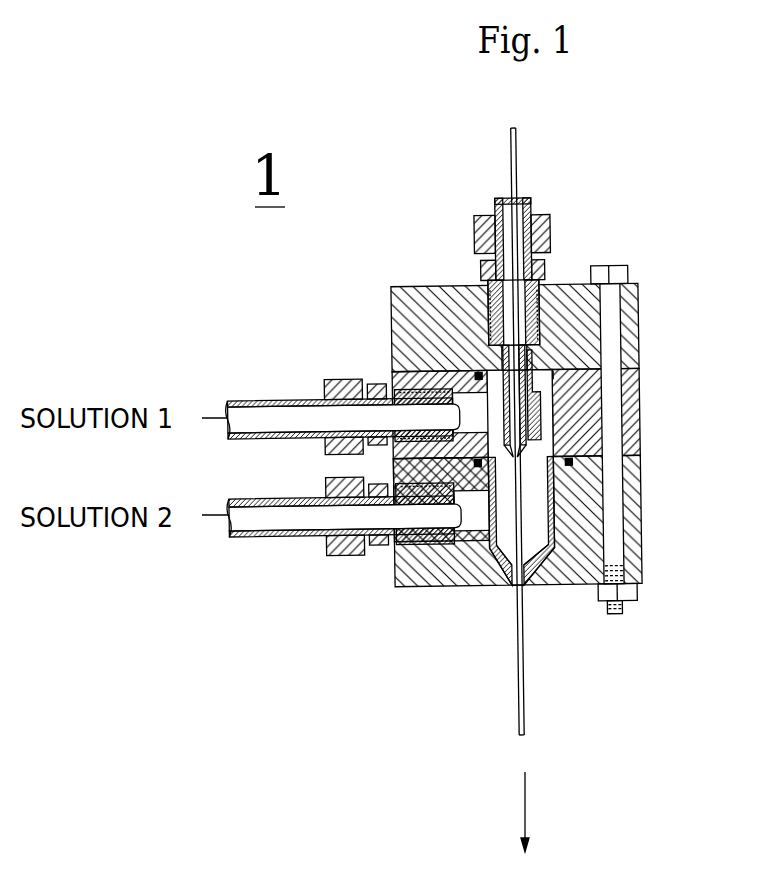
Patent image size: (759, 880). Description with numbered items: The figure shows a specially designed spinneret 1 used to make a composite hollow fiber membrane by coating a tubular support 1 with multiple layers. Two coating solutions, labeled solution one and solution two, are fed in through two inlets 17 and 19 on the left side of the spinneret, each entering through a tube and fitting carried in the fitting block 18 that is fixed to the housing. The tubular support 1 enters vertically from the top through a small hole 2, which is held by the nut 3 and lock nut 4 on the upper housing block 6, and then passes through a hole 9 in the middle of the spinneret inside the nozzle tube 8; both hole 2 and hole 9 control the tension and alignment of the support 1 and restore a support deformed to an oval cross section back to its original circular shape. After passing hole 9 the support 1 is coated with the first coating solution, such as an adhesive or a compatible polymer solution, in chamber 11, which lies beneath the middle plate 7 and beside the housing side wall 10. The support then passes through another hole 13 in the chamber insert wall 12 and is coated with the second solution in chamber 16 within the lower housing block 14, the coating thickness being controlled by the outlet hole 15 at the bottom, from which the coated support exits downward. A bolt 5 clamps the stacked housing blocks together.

The tubular support 1 is at (518, 128).
The small hole 2 is at (520, 198).
The nut 3 is at (547, 230).
The lock nut 4 is at (543, 273).
The bolt 5 is at (625, 272).
The upper housing block 6 is at (635, 323).
The middle plate with seals 7 is at (565, 370).
The nozzle tube 8 is at (522, 412).
The hole 9 is at (535, 432).
The housing side wall 10 is at (638, 445).
The chamber 11 is at (540, 493).
The chamber insert wall 12 is at (557, 533).
The hole 13 is at (527, 567).
The lower housing block 14 is at (638, 560).
The hole 15 is at (527, 585).
The chamber 16 is at (497, 558).
The inlet 17 is at (302, 532).
The fitting block 18 is at (470, 462).
The inlet 19 is at (297, 397).